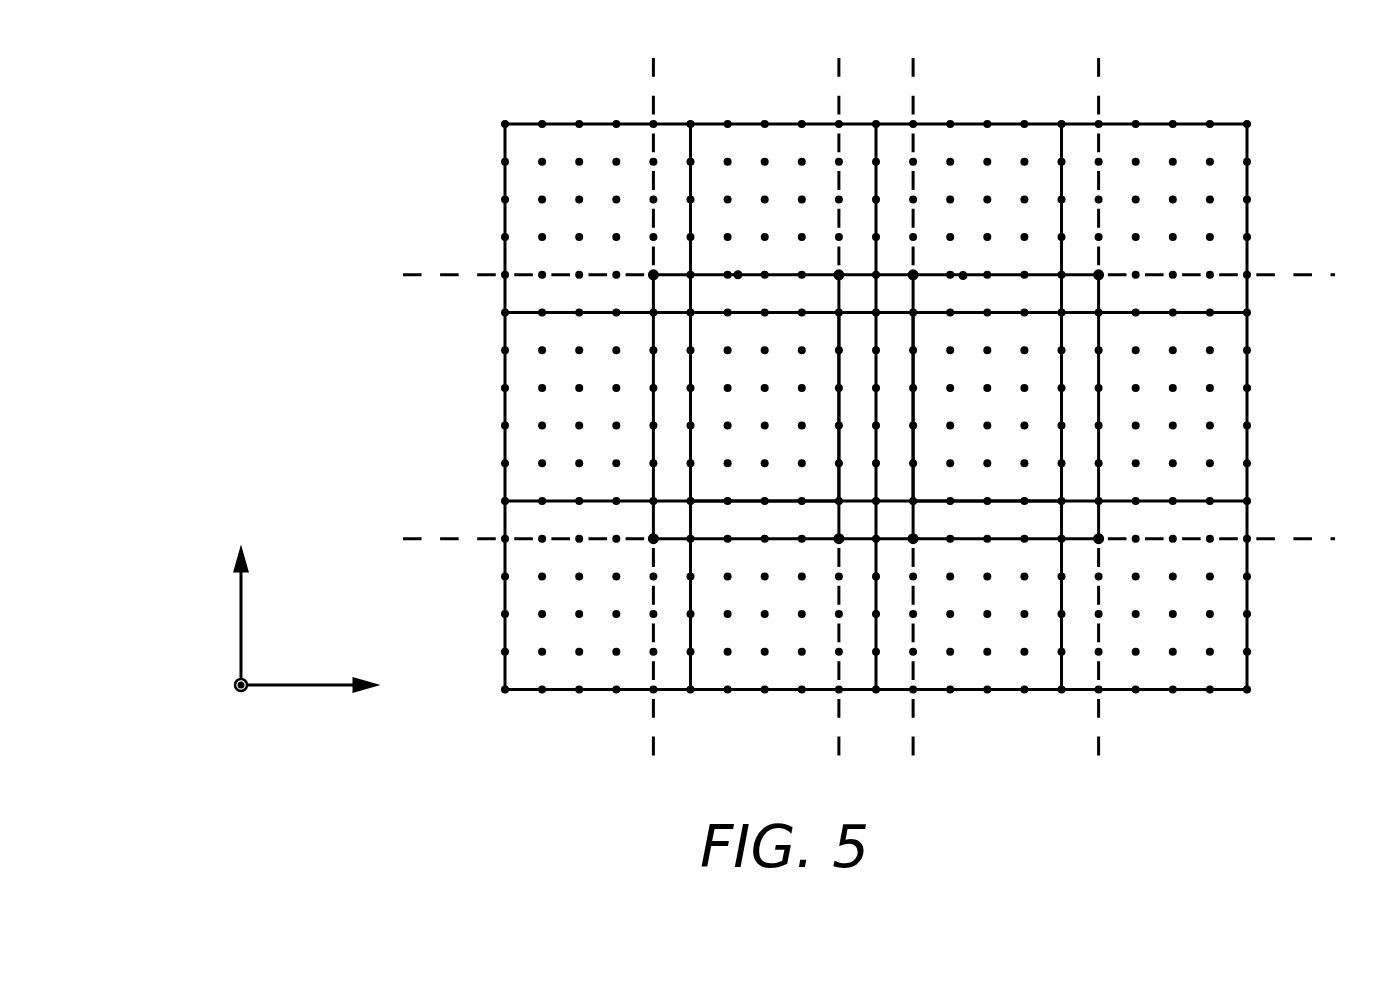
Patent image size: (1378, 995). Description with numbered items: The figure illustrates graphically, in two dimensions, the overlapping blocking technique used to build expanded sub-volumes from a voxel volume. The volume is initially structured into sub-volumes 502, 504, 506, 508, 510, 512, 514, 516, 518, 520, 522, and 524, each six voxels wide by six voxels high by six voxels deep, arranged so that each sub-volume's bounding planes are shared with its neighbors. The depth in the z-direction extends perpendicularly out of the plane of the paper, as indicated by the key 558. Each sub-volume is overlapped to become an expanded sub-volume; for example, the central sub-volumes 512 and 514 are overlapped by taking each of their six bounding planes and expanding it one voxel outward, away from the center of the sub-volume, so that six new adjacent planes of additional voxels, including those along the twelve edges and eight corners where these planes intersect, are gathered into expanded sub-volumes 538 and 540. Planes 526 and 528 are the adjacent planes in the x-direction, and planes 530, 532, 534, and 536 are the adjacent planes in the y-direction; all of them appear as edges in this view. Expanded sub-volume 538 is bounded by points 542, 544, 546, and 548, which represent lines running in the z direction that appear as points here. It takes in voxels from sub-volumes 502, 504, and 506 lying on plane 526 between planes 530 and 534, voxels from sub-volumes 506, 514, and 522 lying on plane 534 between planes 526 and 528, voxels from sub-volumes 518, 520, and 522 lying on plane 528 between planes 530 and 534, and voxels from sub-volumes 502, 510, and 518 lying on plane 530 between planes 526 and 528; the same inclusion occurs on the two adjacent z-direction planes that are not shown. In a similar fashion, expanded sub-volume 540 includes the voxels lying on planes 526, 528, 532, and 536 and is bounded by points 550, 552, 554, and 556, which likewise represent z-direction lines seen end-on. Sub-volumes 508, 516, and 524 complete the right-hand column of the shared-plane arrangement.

The sub-volume 502 is at (557, 124).
The sub-volume 504 is at (790, 124).
The sub-volume 506 is at (967, 124).
The sub-volume 508 is at (1147, 124).
The sub-volume 510 is at (505, 445).
The sub-volume 512 is at (691, 313).
The sub-volume 514 is at (915, 313).
The sub-volume 516 is at (1248, 372).
The sub-volume 518 is at (558, 690).
The sub-volume 520 is at (748, 690).
The sub-volume 522 is at (968, 690).
The sub-volume 524 is at (1148, 690).
The plane 526 is at (1280, 275).
The plane 528 is at (1282, 537).
The plane 530 is at (653, 75).
The plane 532 is at (839, 72).
The plane 534 is at (913, 72).
The plane 536 is at (1098, 72).
The expanded sub-volume 538 is at (738, 274).
The expanded sub-volume 540 is at (963, 276).
The point 542 is at (653, 275).
The point 544 is at (914, 274).
The point 546 is at (914, 539).
The point 548 is at (653, 538).
The point 550 is at (839, 275).
The point 552 is at (1099, 274).
The point 554 is at (1099, 539).
The point 556 is at (838, 538).
The key 558 is at (243, 630).